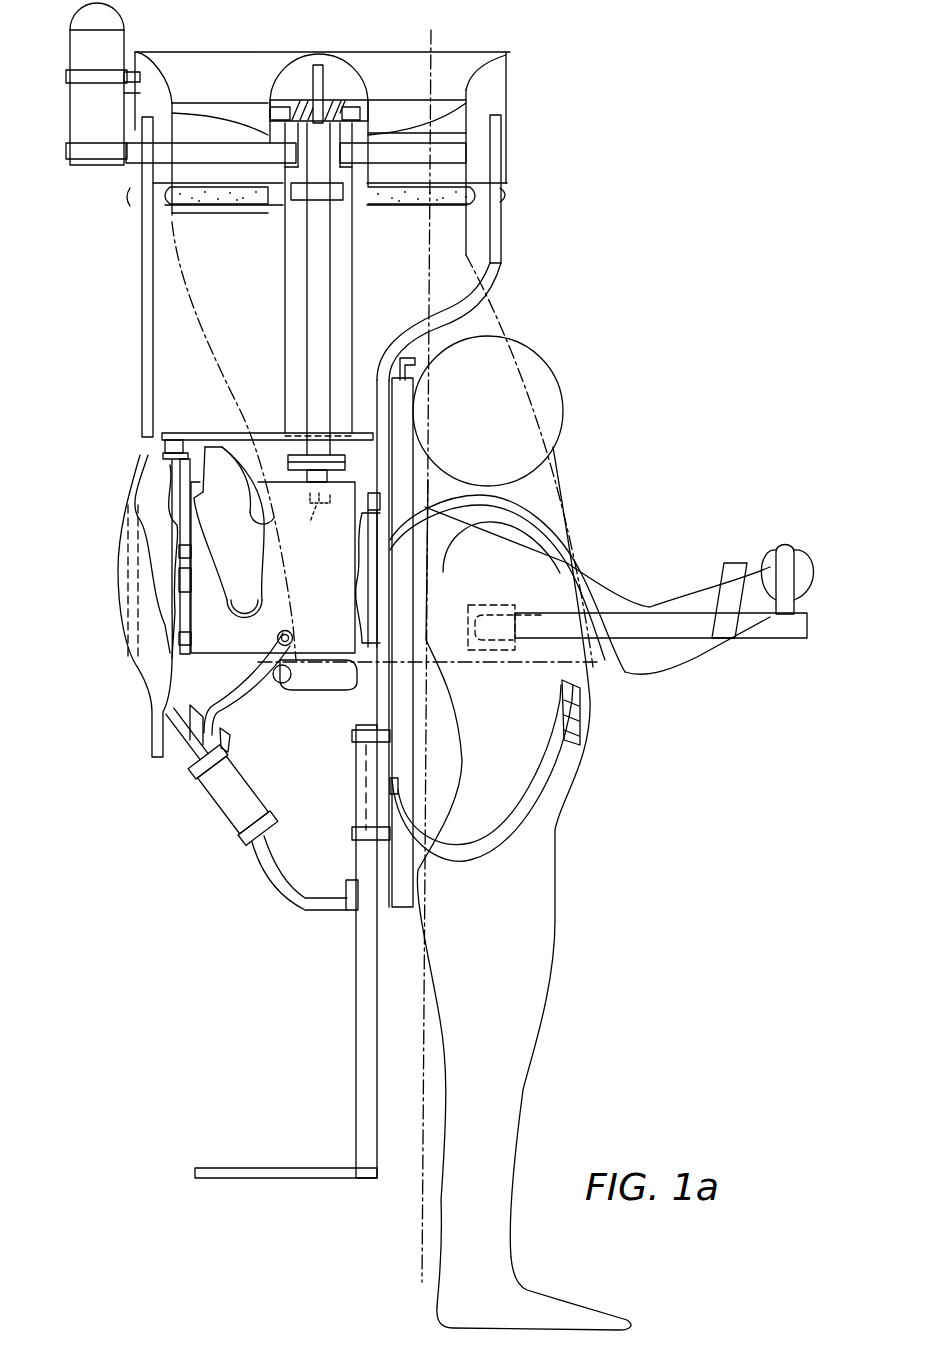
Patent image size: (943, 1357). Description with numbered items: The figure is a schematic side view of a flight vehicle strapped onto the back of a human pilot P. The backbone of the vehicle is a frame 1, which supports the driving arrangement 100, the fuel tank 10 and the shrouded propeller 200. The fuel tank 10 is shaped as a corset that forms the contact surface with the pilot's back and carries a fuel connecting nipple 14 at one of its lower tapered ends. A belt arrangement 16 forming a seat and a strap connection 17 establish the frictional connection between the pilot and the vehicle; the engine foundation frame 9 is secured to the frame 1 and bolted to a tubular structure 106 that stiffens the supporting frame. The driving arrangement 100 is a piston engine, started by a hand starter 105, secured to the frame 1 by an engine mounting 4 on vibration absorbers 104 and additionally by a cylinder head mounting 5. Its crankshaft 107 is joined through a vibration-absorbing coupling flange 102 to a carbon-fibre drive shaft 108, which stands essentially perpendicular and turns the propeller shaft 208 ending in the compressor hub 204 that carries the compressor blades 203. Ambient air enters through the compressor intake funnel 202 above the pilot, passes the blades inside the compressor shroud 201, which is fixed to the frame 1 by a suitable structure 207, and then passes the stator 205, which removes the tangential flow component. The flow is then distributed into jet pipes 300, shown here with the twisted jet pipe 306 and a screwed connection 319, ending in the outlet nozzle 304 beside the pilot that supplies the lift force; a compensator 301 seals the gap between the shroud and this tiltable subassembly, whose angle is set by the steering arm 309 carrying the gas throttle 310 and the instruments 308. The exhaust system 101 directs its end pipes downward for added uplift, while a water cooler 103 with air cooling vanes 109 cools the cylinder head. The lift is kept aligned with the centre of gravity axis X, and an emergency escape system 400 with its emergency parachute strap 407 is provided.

The frame 1 is at (143, 247).
The engine mounting 4 is at (370, 640).
The cylinder head mounting 5 is at (203, 437).
The belt arrangement / engine foundation frame 9 is at (200, 437).
The fuel tank 10 is at (400, 907).
The fuel connecting nipple 14 is at (350, 907).
The belt arrangement 16 is at (530, 817).
The strap connection 17 is at (398, 786).
The driving arrangement 100 is at (222, 650).
The exhaust system 101 is at (150, 547).
The coupling flange 102 is at (282, 452).
The water cooler 103 is at (240, 803).
The vibration absorber 104 is at (177, 430).
The hand starter 105 is at (292, 687).
The tubular structure 106 is at (285, 308).
The crankshaft 107 is at (315, 506).
The drive shaft 108 is at (310, 350).
The air cooling vanes 109 is at (230, 741).
The shrouded propeller 200 is at (297, 78).
The compressor shroud 201 is at (473, 90).
The compressor intake funnel 202 is at (477, 70).
The compressor blades 203 is at (218, 105).
The compressor hub / driving collar 204 is at (317, 107).
The stator 205 is at (205, 222).
The suitable structure 207 is at (502, 122).
The propeller shaft 208 is at (315, 173).
The jet pipe 300 is at (187, 320).
The compensator 301 is at (187, 200).
The outlet nozzle 304 is at (497, 664).
The twisted jet pipe 306 is at (588, 567).
The instruments 308 is at (730, 563).
The steering arm 309 is at (770, 633).
The gas throttle 310 is at (788, 540).
The screwed connection 319 is at (493, 603).
The emergency escape system 400 is at (90, 127).
The emergency parachute strap 407 is at (580, 737).
The human pilot P is at (540, 897).
The centre of gravity axis X is at (424, 658).